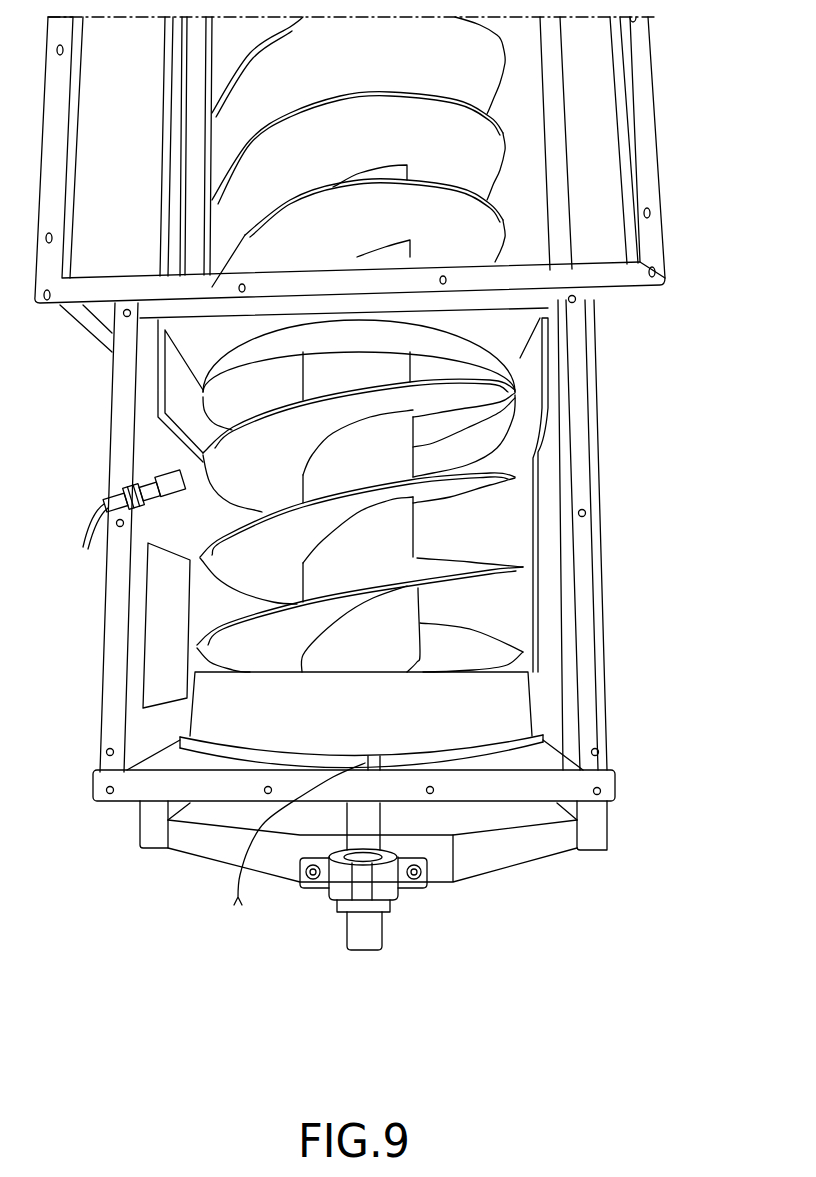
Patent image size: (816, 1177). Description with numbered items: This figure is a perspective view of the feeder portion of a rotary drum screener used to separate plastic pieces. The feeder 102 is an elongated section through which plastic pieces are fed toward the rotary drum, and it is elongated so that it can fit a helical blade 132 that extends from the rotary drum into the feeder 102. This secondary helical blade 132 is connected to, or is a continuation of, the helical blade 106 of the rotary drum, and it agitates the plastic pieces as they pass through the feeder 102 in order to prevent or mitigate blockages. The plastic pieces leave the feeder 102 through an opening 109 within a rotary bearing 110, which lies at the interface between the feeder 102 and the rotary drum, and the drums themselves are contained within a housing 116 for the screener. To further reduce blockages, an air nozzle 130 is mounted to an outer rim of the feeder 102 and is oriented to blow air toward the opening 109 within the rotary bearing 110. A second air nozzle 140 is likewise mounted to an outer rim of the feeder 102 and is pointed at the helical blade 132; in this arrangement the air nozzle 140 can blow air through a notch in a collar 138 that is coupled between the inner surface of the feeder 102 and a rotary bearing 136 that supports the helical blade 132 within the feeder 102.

The feeder 102 is at (605, 598).
The helical blade 106 is at (505, 128).
The opening 109 is at (223, 394).
The rotary bearing 110 is at (497, 357).
The housing 116 is at (667, 240).
The air nozzle 130 is at (163, 474).
The helical blade 132 is at (515, 560).
The rotary bearing 136 is at (523, 707).
The collar 138 is at (533, 745).
The air nozzle 140 is at (372, 763).